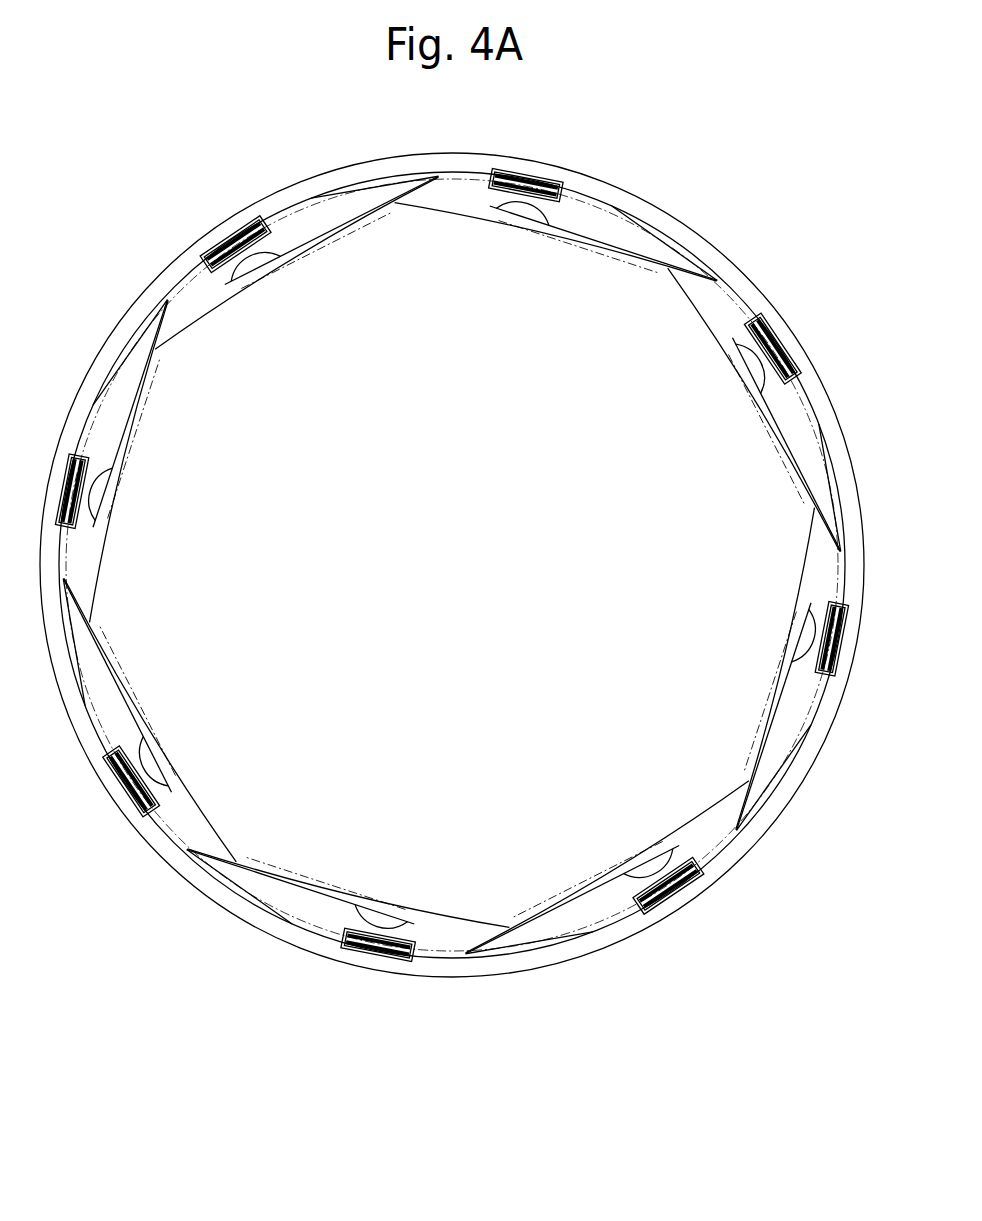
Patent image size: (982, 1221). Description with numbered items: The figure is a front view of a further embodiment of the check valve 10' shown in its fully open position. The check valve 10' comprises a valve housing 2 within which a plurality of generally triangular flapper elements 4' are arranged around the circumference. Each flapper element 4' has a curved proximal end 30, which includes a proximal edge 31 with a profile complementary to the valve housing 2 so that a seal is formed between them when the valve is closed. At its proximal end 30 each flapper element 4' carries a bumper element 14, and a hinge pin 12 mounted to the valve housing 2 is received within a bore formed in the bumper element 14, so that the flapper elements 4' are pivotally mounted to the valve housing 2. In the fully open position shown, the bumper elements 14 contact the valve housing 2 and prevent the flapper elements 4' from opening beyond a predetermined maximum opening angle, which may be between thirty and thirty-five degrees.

The check valve 10' is at (451, 538).
The flapper element 4' is at (667, 330).
The proximal end 30 is at (836, 468).
The proximal edge 31 is at (757, 823).
The valve housing 2 is at (640, 923).
The hinge pin 12 is at (340, 952).
The bumper element 14 is at (387, 960).